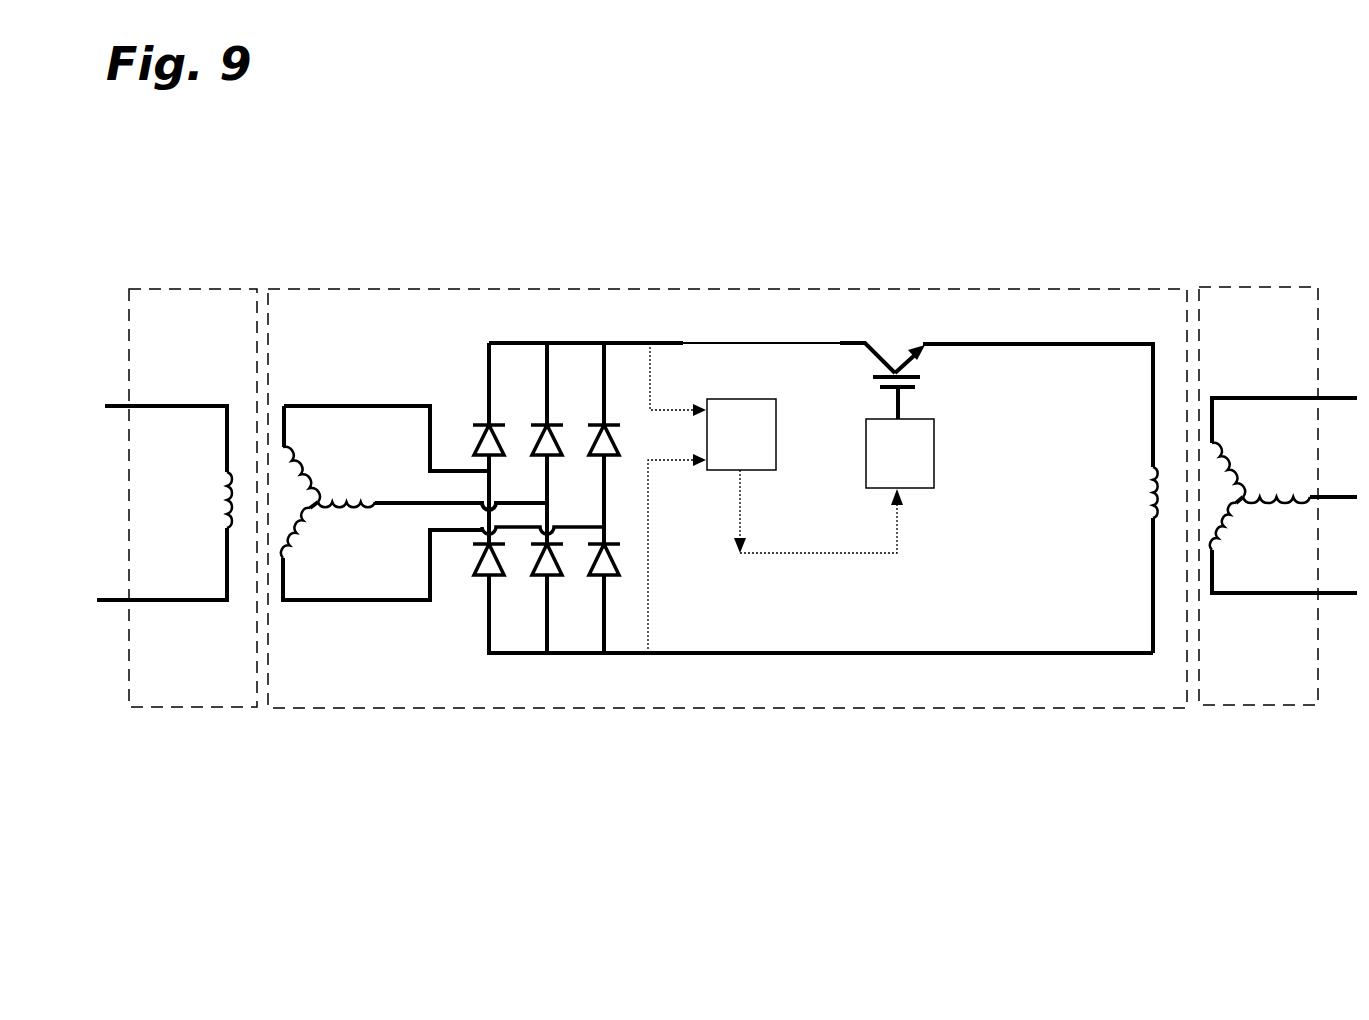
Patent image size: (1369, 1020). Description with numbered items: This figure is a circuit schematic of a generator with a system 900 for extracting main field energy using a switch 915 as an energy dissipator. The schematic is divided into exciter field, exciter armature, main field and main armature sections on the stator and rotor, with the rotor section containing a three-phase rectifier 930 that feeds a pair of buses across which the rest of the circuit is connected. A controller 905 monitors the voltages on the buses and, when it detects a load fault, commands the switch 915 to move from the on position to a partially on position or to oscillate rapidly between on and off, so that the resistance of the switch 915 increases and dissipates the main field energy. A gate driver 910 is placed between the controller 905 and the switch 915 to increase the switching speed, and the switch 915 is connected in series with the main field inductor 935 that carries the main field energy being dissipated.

The system 900 is at (437, 162).
The controller 905 is at (772, 498).
The gate driver 910 is at (900, 462).
The switch 915 is at (886, 362).
The rotating rectifier 930 is at (474, 617).
The main field inductor 935 is at (1150, 481).